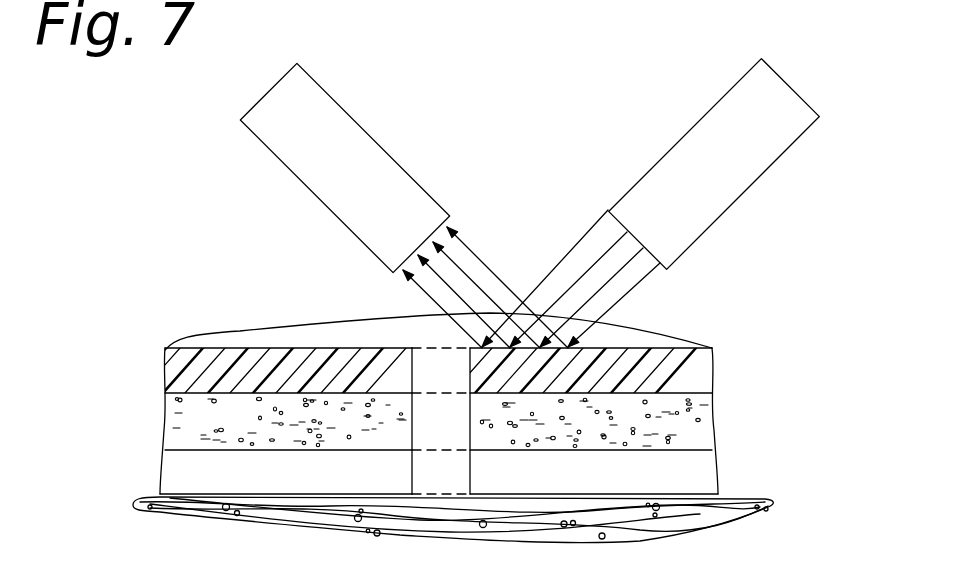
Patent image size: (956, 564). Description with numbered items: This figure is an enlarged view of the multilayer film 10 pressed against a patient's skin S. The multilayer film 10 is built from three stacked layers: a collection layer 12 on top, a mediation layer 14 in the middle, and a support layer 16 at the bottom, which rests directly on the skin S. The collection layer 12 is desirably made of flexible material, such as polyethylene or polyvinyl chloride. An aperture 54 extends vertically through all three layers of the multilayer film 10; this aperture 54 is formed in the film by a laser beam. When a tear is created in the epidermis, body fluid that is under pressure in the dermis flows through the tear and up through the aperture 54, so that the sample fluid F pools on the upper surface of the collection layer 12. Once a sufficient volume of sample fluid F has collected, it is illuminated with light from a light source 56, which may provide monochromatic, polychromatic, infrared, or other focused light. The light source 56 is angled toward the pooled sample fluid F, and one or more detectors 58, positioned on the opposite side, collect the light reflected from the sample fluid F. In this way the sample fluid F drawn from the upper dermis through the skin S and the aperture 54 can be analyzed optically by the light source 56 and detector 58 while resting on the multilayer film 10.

The multilayer film 10 is at (439, 381).
The collection layer 12 is at (716, 357).
The mediation layer 14 is at (706, 417).
The support layer 16 is at (712, 468).
The aperture 54 is at (441, 364).
The light source 56 is at (748, 190).
The detector 58 is at (312, 198).
The sample fluid F is at (236, 333).
The skin S is at (742, 497).